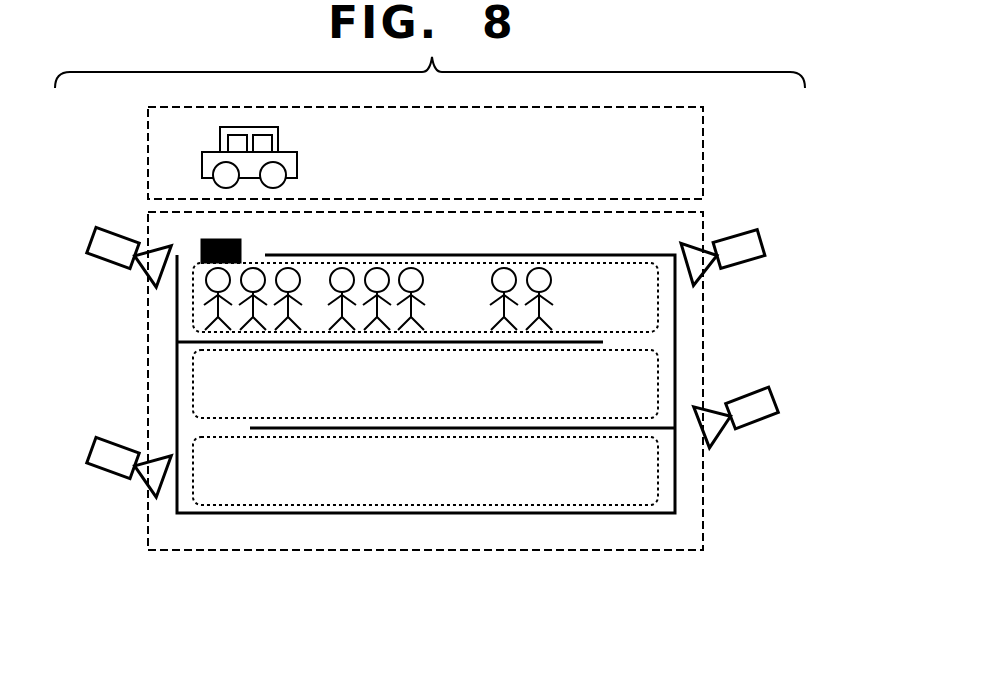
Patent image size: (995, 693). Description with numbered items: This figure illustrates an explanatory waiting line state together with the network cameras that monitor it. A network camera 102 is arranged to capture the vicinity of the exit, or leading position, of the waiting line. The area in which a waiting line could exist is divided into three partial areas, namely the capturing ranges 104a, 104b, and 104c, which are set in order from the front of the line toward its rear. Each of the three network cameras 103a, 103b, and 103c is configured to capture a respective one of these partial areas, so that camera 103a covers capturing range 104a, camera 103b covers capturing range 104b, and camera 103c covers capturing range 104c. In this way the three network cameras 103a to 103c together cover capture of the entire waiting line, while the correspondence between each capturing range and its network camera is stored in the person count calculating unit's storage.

The network camera 102 is at (89, 229).
The network camera 103a is at (763, 229).
The network camera 103b is at (760, 431).
The network camera 103c is at (89, 445).
The capturing range 104a is at (658, 313).
The capturing range 104b is at (658, 365).
The capturing range 104c is at (658, 485).